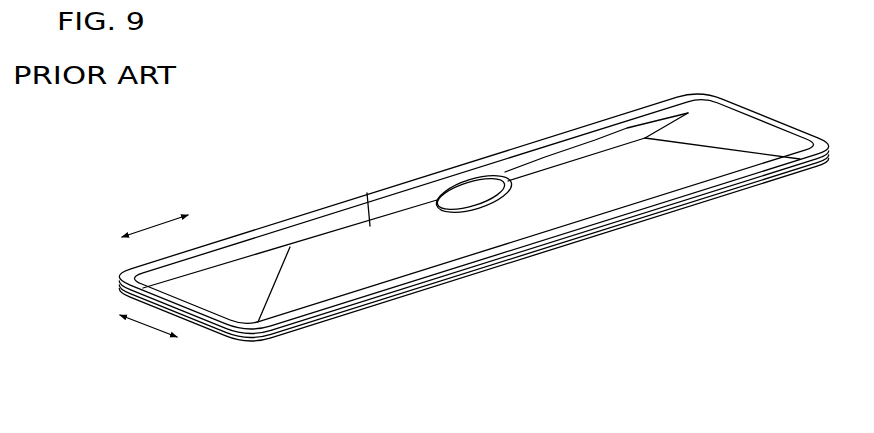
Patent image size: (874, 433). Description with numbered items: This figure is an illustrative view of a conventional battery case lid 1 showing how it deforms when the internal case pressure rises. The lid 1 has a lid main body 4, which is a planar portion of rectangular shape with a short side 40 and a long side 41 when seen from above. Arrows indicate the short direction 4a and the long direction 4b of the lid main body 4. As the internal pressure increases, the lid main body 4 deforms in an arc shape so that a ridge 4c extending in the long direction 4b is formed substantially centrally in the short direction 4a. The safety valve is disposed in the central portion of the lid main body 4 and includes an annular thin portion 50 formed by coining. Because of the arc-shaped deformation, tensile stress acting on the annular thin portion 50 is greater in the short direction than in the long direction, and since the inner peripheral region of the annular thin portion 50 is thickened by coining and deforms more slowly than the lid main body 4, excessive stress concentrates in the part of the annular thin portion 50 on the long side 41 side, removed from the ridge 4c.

The lid 1 is at (473, 188).
The lid main body 4 is at (700, 184).
The short direction 4a is at (147, 332).
The long direction 4b is at (158, 228).
The ridge 4c is at (367, 200).
The short side 40 is at (775, 141).
The long side 41 is at (546, 158).
The annular thin portion 50 is at (457, 183).